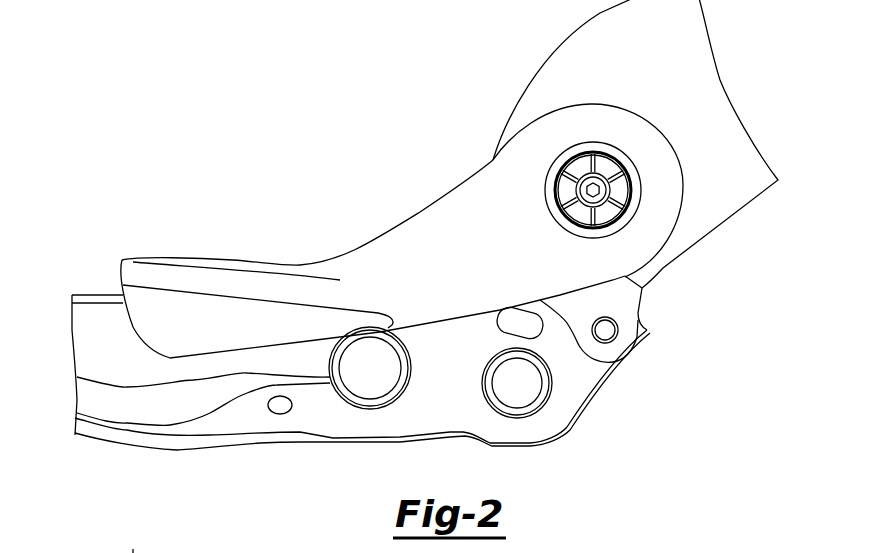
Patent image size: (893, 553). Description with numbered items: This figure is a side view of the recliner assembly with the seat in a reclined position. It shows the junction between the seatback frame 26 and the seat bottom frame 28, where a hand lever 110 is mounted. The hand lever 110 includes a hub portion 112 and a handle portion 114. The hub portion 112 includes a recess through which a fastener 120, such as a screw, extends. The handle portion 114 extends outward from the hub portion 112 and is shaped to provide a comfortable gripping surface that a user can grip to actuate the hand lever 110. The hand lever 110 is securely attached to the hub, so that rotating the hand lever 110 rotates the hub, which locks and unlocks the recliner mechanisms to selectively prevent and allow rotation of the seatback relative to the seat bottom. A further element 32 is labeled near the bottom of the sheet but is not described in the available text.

The hand lever 110 is at (394, 174).
The hub portion 112 is at (557, 125).
The handle portion 114 is at (247, 267).
The fastener 120 is at (598, 186).
The seatback frame 26 is at (702, 72).
The seat bottom frame 28 is at (543, 427).
The frame member 32 is at (134, 538).